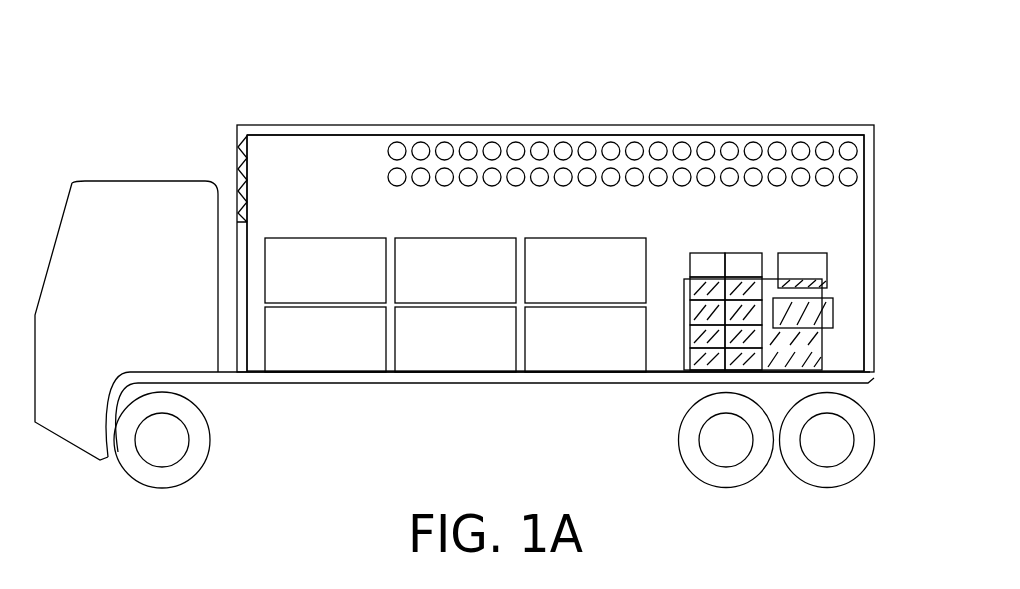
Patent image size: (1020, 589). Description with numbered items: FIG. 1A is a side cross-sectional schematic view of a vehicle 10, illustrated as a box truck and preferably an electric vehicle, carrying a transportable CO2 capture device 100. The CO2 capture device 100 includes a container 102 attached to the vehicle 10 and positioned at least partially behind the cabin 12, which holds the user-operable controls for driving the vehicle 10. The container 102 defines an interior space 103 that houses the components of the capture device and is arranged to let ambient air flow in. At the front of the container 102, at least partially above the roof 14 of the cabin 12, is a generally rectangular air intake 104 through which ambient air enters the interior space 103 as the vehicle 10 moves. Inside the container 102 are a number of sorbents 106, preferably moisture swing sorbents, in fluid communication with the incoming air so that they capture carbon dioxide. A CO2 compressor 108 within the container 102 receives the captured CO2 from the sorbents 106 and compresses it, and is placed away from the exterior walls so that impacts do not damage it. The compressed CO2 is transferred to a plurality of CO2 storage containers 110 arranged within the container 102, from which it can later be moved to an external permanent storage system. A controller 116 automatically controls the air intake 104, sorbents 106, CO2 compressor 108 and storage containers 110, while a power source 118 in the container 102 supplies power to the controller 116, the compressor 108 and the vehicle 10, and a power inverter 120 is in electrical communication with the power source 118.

The vehicle 10 is at (100, 120).
The cabin 12 is at (183, 337).
The roof 14 is at (150, 197).
The CO2 capture device 100 is at (428, 74).
The container 102 is at (790, 132).
The interior space 103 is at (328, 160).
The air intake 104 is at (237, 157).
The sorbents 106 is at (455, 305).
The CO2 compressor 108 is at (822, 348).
The CO2 storage containers 110 is at (587, 140).
The controller 116 is at (798, 253).
The power source 118 is at (706, 253).
The power inverter 120 is at (833, 310).